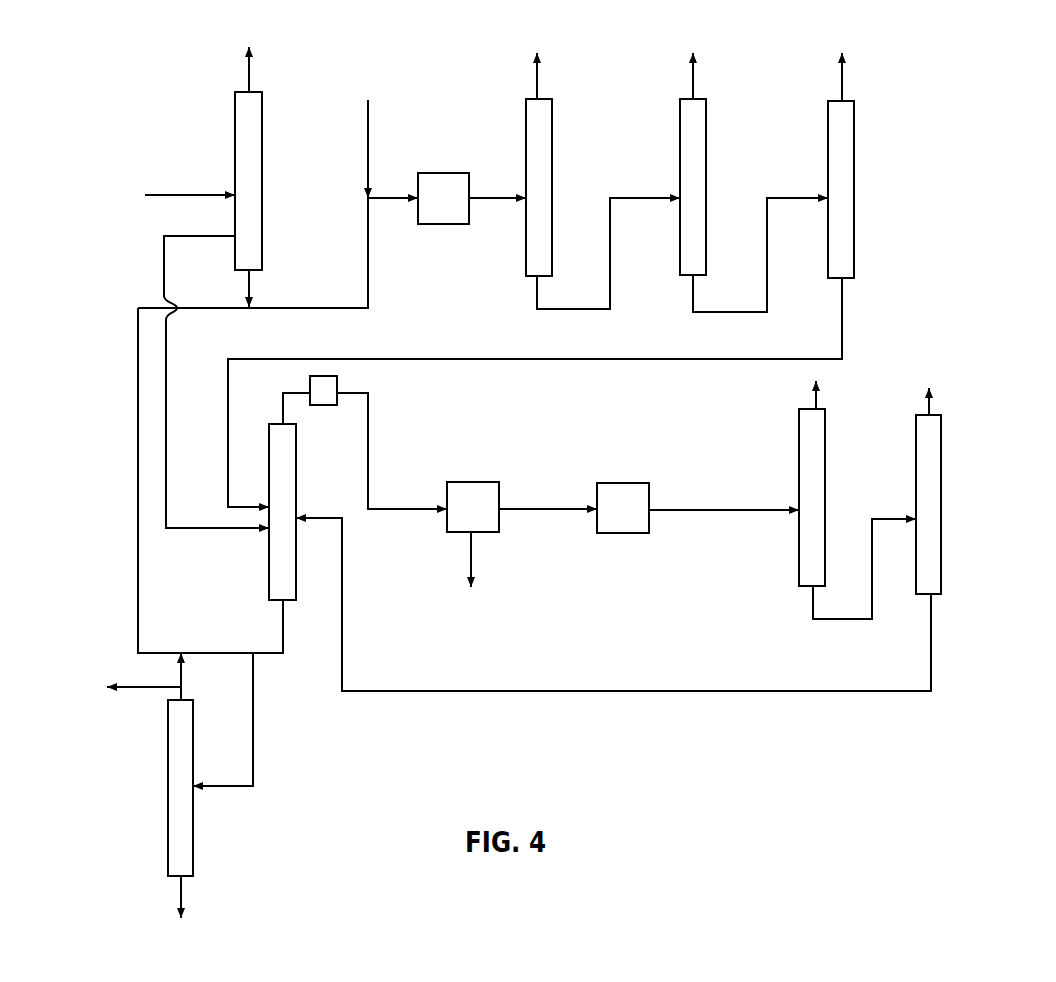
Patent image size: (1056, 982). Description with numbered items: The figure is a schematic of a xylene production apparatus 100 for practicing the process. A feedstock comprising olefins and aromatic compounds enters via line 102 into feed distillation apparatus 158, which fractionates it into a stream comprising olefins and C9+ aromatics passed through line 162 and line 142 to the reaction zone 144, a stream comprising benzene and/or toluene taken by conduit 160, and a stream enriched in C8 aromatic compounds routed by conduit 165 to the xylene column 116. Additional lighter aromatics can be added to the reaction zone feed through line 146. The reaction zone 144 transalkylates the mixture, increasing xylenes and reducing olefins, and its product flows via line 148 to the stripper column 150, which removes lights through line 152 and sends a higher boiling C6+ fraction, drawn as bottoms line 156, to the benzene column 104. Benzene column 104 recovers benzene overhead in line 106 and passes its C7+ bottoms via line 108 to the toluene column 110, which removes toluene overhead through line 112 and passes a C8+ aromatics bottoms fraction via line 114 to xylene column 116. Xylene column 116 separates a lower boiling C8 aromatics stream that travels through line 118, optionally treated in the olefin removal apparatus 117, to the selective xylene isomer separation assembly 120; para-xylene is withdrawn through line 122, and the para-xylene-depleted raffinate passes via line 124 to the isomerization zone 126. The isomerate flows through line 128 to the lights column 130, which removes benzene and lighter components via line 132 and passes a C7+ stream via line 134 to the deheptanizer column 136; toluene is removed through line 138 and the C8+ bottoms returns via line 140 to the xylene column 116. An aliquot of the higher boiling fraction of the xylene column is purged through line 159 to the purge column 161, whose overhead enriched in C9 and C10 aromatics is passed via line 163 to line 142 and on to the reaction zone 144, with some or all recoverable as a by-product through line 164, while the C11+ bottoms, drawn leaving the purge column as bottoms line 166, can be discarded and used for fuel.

The xylene production apparatus 100 is at (830, 730).
The line 102 is at (198, 193).
The benzene column 104 is at (697, 165).
The line 106 is at (693, 83).
The line 108 is at (727, 313).
The toluene column 110 is at (844, 193).
The line 112 is at (844, 89).
The line 114 is at (844, 337).
The xylene column 116 is at (282, 533).
The olefin removal apparatus 117 is at (323, 393).
The line 118 is at (372, 475).
The selective xylene isomer separation assembly 120 is at (477, 500).
The line 122 is at (467, 548).
The line 124 is at (533, 513).
The isomerization zone 126 is at (623, 500).
The line 128 is at (685, 515).
The lights column 130 is at (810, 483).
The line 132 is at (813, 402).
The line 134 is at (890, 517).
The deheptanizer column 136 is at (932, 486).
The line 138 is at (933, 403).
The line 140 is at (718, 692).
The line 142 is at (283, 640).
The reaction zone 144 is at (443, 202).
The line 146 is at (370, 135).
The line 148 is at (507, 194).
The stripper column 150 is at (538, 228).
The line 152 is at (536, 83).
The bottoms stream 156 is at (538, 293).
The feed distillation apparatus 158 is at (252, 162).
The line 159 is at (255, 773).
The conduit 160 is at (248, 83).
The purge column 161 is at (175, 813).
The line 162 is at (247, 287).
The line 163 is at (184, 673).
The line 164 is at (137, 685).
The conduit 165 is at (163, 267).
The bottoms stream 166 is at (183, 897).